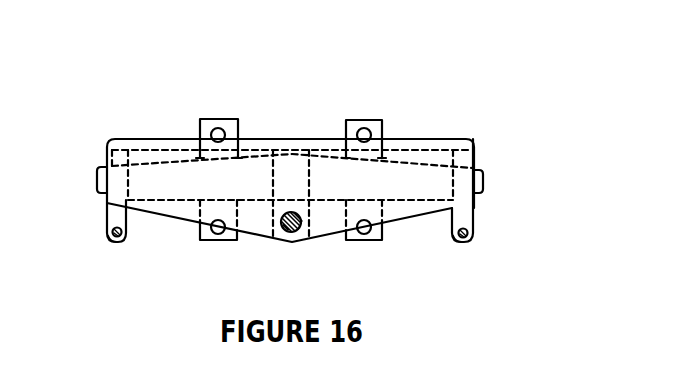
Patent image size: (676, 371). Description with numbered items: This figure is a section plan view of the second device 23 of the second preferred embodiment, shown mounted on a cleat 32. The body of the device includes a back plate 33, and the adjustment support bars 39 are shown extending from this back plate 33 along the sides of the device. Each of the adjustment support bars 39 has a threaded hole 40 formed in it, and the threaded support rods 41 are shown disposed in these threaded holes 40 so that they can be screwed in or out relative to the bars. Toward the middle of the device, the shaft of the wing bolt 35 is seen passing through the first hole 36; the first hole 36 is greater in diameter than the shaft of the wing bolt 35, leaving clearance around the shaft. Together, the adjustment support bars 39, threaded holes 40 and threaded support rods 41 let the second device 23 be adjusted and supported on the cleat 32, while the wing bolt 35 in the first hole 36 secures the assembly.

The second device 23 is at (400, 139).
The back plate 33 is at (253, 139).
The cleat 32 is at (480, 170).
The wing bolt 35 is at (287, 241).
The first hole 36 is at (298, 241).
The adjustment support bars 39 is at (107, 218).
The threaded holes 40 is at (127, 232).
The threaded support rods 41 is at (122, 241).